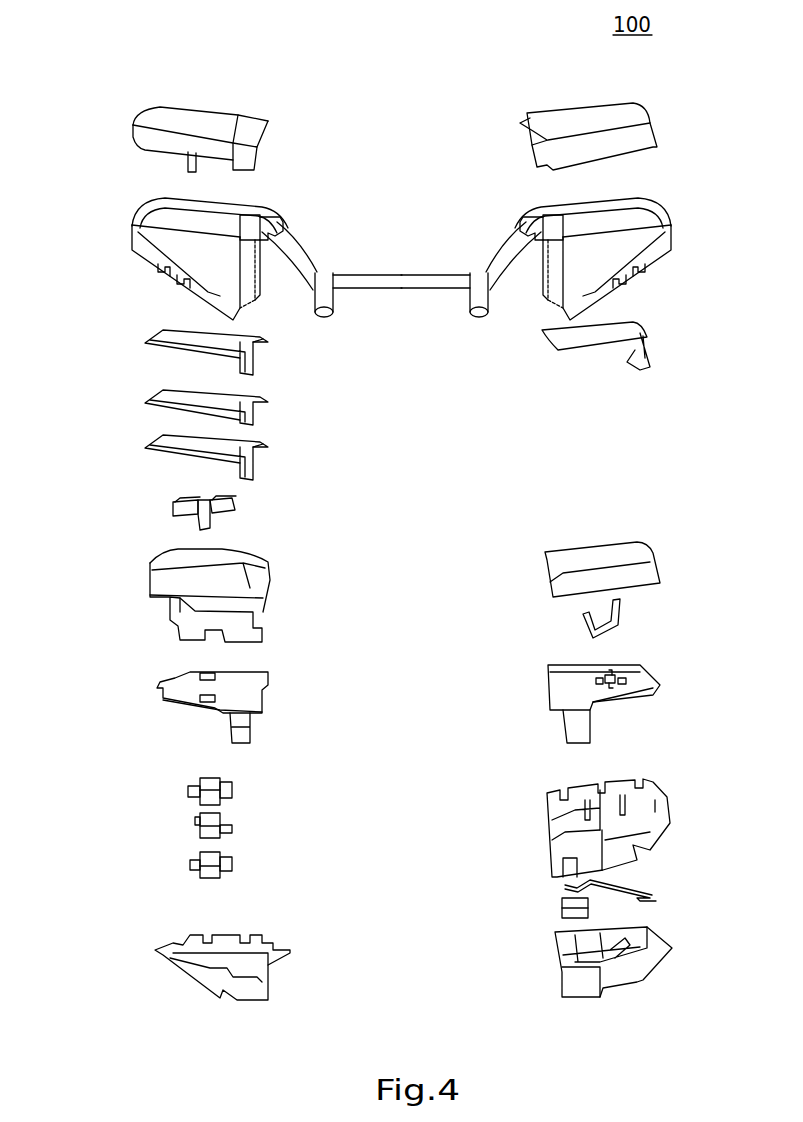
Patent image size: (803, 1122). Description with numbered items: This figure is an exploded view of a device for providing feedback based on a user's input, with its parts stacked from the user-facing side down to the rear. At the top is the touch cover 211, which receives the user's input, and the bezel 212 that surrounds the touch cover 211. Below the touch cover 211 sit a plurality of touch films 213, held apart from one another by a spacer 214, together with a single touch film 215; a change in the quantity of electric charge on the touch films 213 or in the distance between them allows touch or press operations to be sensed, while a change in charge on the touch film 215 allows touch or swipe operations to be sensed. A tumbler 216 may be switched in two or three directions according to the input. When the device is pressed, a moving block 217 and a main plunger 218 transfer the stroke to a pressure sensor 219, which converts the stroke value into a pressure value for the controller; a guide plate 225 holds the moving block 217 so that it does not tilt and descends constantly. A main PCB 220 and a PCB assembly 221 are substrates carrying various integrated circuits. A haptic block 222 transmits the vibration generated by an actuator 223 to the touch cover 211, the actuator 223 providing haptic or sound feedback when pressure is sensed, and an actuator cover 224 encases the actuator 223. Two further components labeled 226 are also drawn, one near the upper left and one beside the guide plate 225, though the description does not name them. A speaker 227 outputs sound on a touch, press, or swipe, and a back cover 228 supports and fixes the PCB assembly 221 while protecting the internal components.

The touch cover 211 is at (520, 122).
The bezel 212 is at (140, 228).
The plurality of touch films 213 is at (153, 448).
The spacer 214 is at (260, 403).
The single touch film 215 is at (630, 330).
The tumbler 216 is at (180, 500).
The moving block 217 is at (648, 567).
The main plunger 218 is at (620, 610).
The pressure sensor 219 is at (580, 675).
The main PCB 220 is at (577, 695).
The PCB assembly 221 is at (247, 702).
The haptic block 222 is at (188, 792).
The actuator 223 is at (195, 818).
The actuator cover 224 is at (190, 864).
The guide plate 225 is at (663, 812).
The cover / spring member 226 is at (160, 580).
The speaker 227 is at (562, 906).
The back cover 228 is at (563, 962).